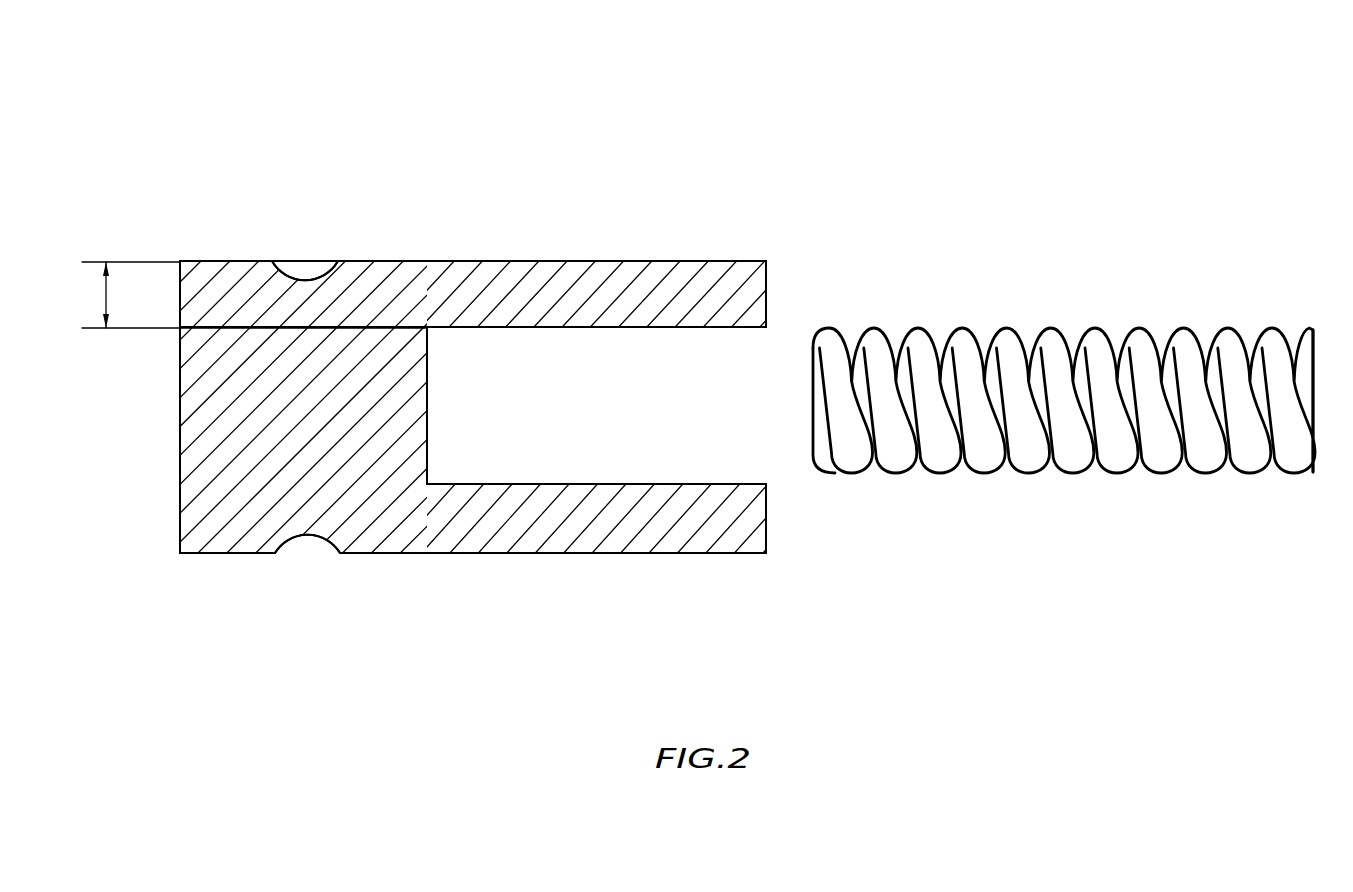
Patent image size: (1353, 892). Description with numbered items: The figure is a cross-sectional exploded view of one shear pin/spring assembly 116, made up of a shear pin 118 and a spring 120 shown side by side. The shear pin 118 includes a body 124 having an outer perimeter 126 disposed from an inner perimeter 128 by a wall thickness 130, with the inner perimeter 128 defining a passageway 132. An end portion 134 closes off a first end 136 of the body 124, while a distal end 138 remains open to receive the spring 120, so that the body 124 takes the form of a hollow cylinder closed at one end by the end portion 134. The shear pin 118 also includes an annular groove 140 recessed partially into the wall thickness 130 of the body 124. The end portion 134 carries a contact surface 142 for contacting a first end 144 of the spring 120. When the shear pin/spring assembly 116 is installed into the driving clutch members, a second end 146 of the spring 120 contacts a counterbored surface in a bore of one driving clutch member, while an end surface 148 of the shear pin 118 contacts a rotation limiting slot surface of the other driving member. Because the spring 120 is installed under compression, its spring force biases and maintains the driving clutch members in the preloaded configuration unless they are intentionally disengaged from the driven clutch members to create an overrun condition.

The shear pin/spring assembly 116 is at (335, 118).
The shear pin 118 is at (516, 195).
The spring 120 is at (1112, 264).
The body 124 is at (578, 292).
The outer perimeter 126 is at (705, 255).
The inner perimeter 128 is at (691, 333).
The wall thickness 130 is at (242, 295).
The passageway 132 is at (603, 420).
The end portion 134 is at (230, 578).
The first end 136 is at (277, 424).
The distal end 138 is at (764, 572).
The annular groove 140 is at (306, 279).
The contact surface 142 is at (432, 385).
The first end of the spring 144 is at (808, 390).
The second end of the spring 146 is at (1313, 387).
The end surface 148 is at (176, 389).